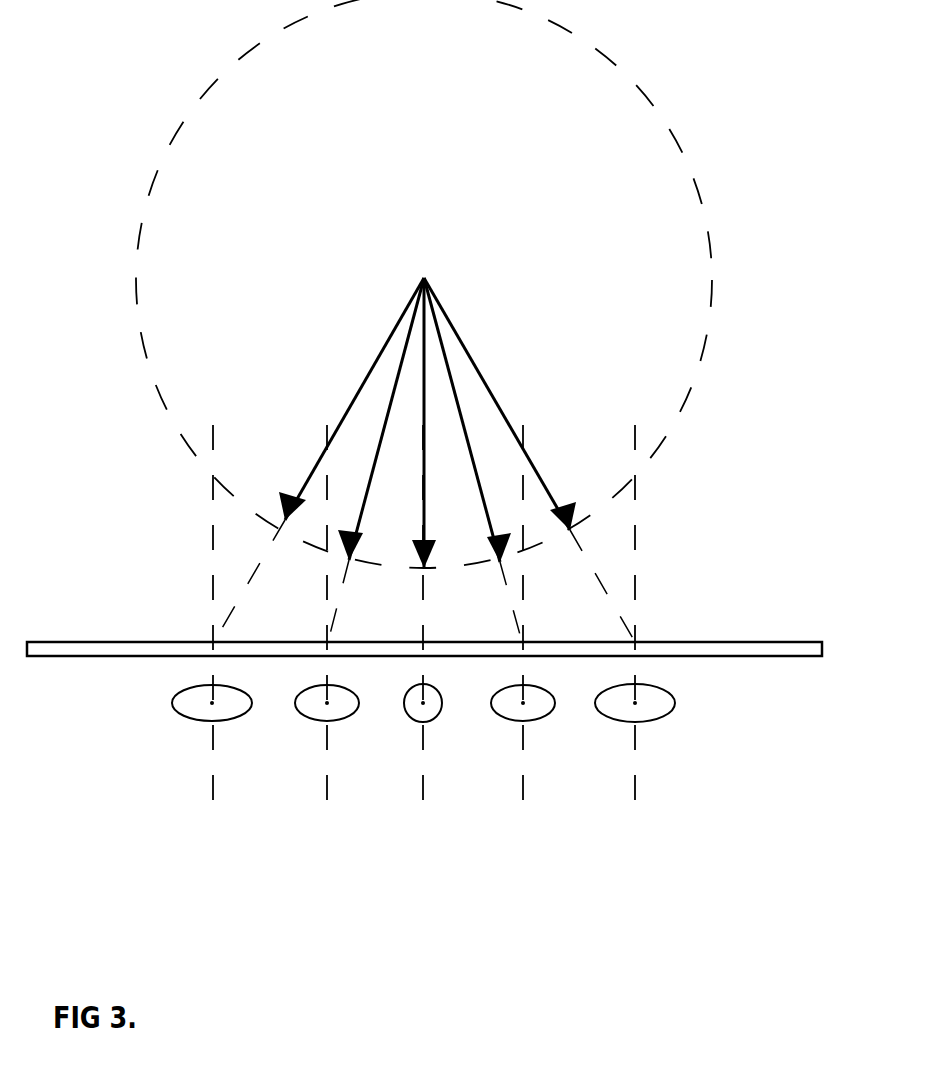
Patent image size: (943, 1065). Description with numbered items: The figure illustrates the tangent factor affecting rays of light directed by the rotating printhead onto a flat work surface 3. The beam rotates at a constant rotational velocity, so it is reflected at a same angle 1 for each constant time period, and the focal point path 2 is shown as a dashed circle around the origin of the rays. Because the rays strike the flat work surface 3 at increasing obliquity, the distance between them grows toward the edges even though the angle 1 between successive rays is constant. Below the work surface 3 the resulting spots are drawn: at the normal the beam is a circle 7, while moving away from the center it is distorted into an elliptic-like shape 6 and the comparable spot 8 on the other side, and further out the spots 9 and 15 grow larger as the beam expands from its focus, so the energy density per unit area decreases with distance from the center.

The angle between laser lines 1 is at (423, 337).
The focal point path 2 is at (203, 477).
The work surface 3 is at (692, 640).
The laser beam shape away from the center 6 is at (288, 726).
The laser beam shape at the normal to the work area 7 is at (418, 722).
The laser beam size and shape at the work surface 8 is at (543, 722).
The laser beam size and shape at the work area 9 is at (668, 712).
The laser beam size 15 is at (172, 717).